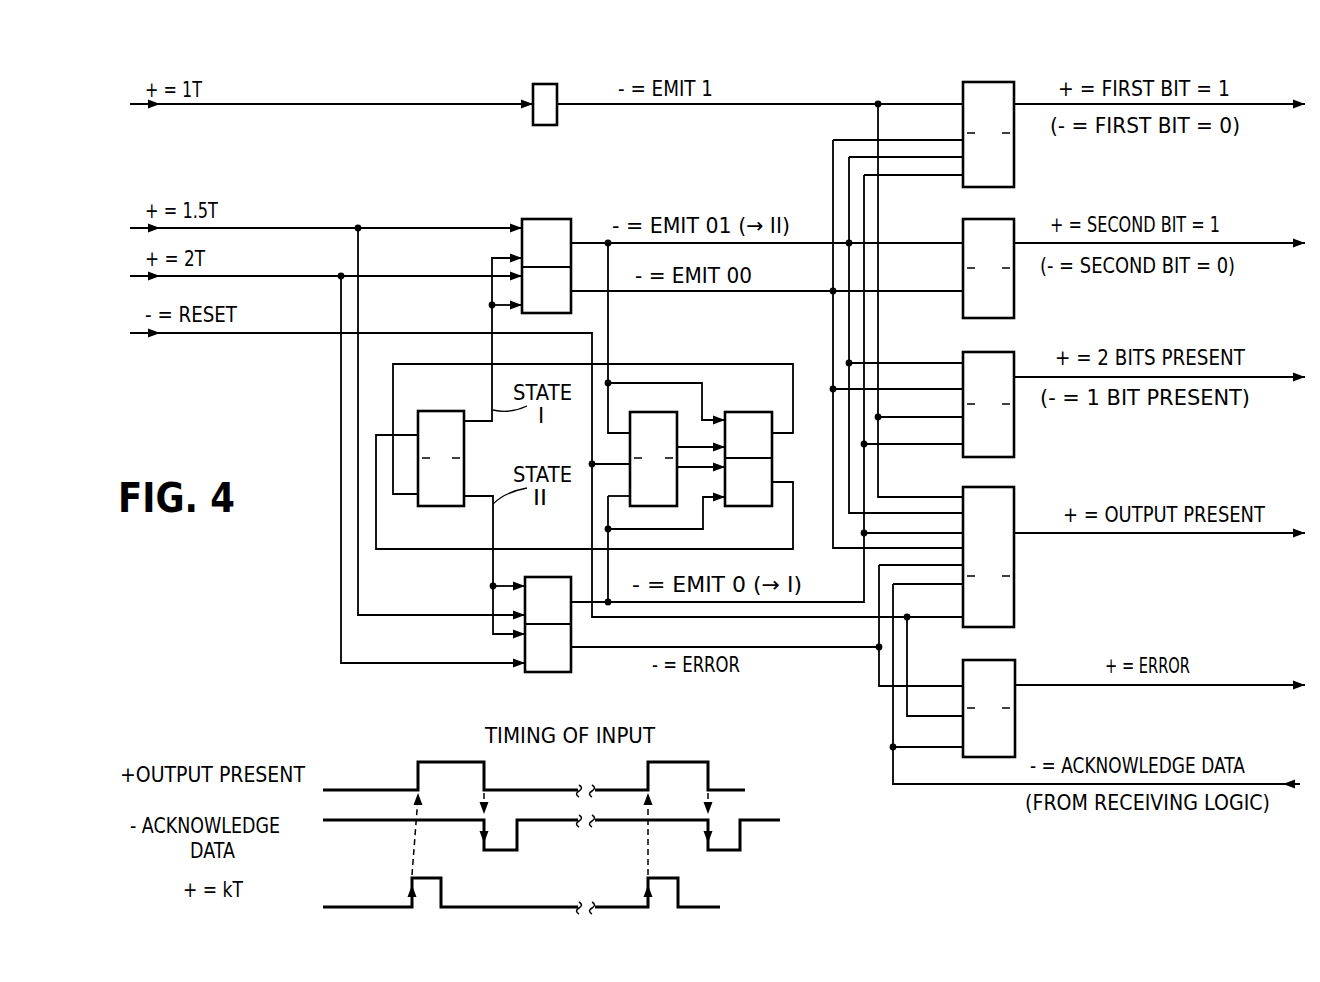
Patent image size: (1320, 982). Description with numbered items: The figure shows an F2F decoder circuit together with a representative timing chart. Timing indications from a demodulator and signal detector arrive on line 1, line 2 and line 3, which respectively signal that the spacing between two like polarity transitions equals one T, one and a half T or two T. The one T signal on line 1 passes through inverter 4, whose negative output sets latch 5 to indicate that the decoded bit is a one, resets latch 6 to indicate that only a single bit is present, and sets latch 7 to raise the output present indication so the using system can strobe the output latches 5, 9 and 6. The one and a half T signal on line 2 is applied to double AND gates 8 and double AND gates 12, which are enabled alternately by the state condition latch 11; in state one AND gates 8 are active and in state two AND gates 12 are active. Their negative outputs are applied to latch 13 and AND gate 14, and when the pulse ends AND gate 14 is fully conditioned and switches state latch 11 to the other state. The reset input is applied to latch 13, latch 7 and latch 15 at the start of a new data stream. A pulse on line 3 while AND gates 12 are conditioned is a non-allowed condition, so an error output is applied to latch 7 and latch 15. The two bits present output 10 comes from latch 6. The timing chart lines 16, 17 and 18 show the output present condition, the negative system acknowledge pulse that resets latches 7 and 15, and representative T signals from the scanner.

The line 1 is at (330, 104).
The line 2 is at (306, 228).
The line 3 is at (304, 276).
The inverter 4 is at (560, 92).
The latch 5 is at (963, 88).
The latch 6 is at (963, 352).
The latch 7 is at (1014, 497).
The double AND gates 8 is at (575, 224).
The latch 9 is at (963, 228).
The 2 bits present output line 10 is at (1035, 377).
The state condition latch 11 is at (425, 411).
The double AND gates 12 is at (533, 577).
The latch 13 is at (641, 412).
The double AND gate 14 is at (745, 412).
The latch 15 is at (1015, 668).
The signal condition line 16 is at (548, 776).
The signal condition line 17 is at (568, 835).
The signal condition line 18 is at (545, 892).